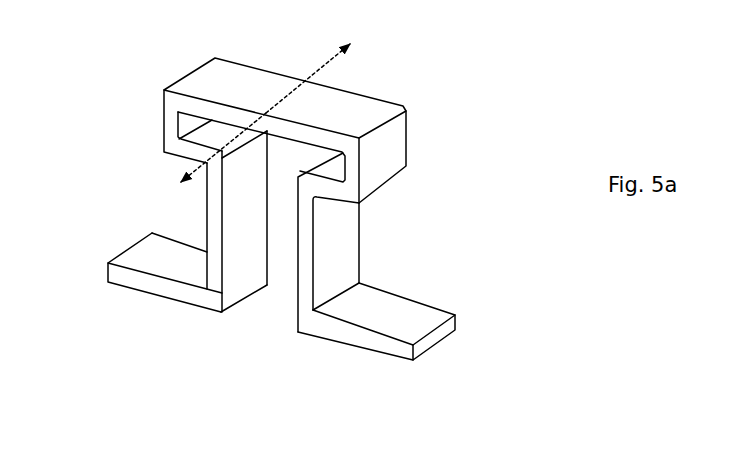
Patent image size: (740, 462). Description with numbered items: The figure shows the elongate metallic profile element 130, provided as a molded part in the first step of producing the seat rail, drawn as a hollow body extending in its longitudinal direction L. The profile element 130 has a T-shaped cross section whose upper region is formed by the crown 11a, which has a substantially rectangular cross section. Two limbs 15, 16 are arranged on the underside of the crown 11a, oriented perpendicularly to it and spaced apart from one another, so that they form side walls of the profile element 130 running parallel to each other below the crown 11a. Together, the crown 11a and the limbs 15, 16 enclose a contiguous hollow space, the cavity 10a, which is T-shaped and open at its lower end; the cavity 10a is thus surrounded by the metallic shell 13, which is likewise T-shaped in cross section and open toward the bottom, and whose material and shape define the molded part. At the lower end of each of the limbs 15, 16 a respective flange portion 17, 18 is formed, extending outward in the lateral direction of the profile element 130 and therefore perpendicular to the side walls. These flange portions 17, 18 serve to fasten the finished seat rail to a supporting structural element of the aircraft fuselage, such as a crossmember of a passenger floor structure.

The profile element 130 is at (116, 79).
The crown 11a is at (336, 113).
The shell 13 is at (443, 162).
The limb 15 is at (193, 203).
The limb 16 is at (365, 243).
The flange portion 17 is at (148, 310).
The flange portion 18 is at (372, 356).
The cavity 10a is at (274, 301).
The longitudinal direction L is at (276, 98).